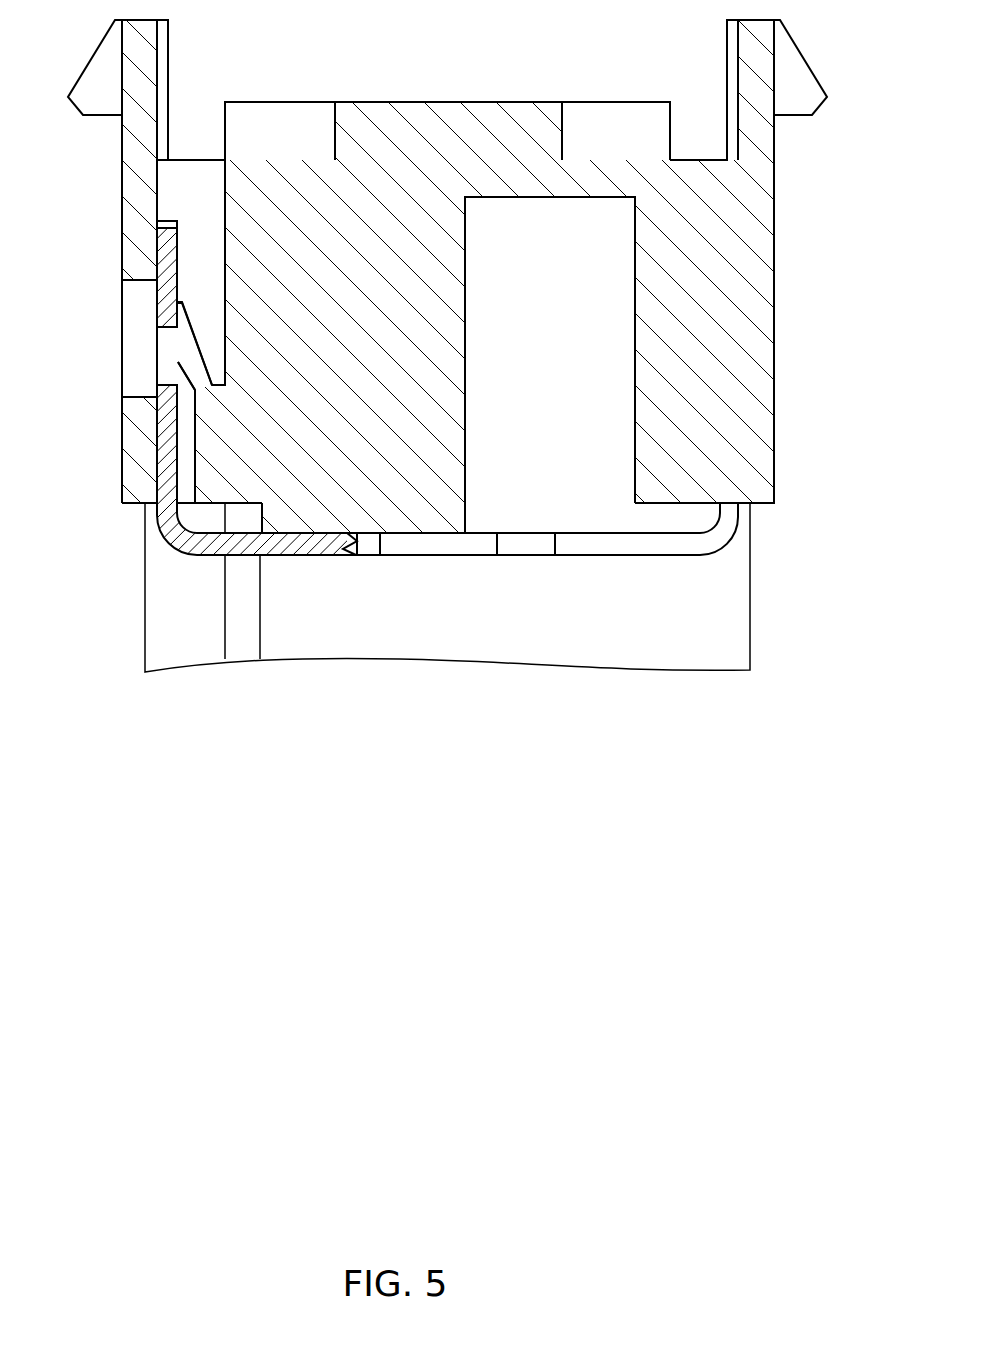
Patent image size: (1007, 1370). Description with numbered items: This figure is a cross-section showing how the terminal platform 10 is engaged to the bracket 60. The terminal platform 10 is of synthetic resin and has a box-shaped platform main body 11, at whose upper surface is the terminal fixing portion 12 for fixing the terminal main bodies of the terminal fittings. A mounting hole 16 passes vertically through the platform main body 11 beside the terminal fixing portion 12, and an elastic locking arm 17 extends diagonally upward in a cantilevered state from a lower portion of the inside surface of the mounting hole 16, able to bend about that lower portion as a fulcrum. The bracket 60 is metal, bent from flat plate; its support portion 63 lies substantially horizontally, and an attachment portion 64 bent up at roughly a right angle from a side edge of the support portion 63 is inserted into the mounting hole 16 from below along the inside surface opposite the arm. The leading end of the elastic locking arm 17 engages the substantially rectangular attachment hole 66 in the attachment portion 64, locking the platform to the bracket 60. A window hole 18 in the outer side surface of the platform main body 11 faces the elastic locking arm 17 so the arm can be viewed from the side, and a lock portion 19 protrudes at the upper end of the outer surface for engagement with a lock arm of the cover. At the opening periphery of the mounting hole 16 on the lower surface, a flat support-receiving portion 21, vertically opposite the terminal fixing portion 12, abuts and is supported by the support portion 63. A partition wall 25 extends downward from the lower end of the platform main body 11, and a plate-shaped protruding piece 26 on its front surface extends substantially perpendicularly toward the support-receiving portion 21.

The terminal platform 10 is at (778, 218).
The platform main body 11 is at (760, 320).
The terminal fixing portion 12 is at (365, 100).
The mounting hole 16 is at (158, 193).
The elastic locking arm 17 is at (178, 353).
The window hole 18 is at (122, 280).
The lock portion 19 is at (93, 88).
The support-receiving portion 21 is at (293, 540).
The partition wall 25 is at (640, 672).
The protruding piece 26 is at (245, 650).
The bracket 60 is at (723, 545).
The support portion 63 is at (338, 553).
The attachment portion 64 is at (163, 450).
The attachment hole 66 is at (167, 327).